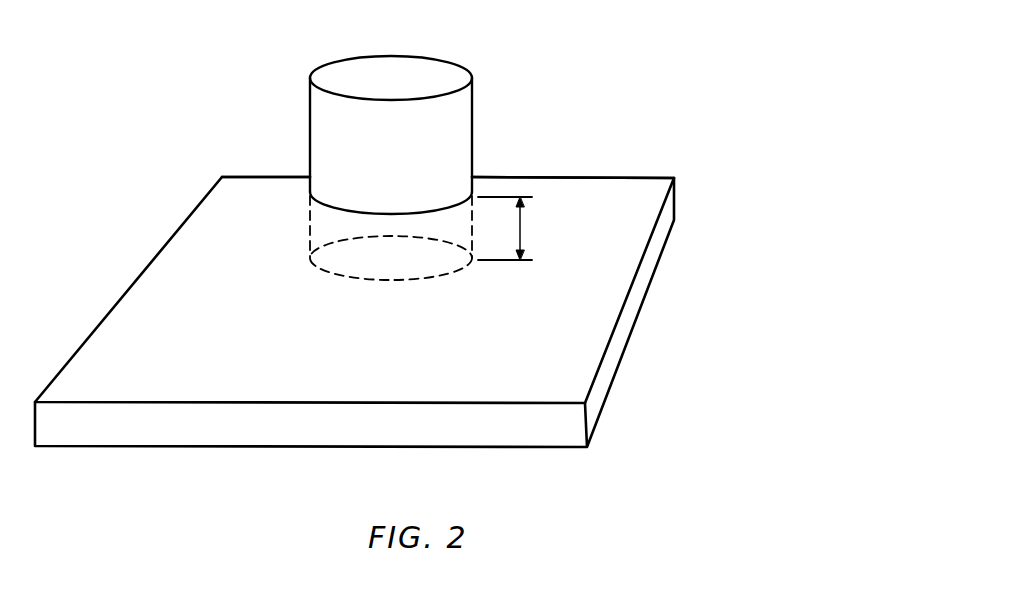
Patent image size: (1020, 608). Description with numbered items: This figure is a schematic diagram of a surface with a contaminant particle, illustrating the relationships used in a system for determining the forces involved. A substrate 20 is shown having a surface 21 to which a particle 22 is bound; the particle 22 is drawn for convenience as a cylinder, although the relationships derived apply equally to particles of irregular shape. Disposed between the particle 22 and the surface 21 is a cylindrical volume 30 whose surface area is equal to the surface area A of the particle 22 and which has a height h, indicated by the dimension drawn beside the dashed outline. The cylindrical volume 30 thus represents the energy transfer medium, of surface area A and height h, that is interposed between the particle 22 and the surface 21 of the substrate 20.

The substrate 20 is at (636, 293).
The surface 21 is at (603, 192).
The particle 22 is at (473, 115).
The cylindrical volume 30 is at (322, 228).
The height h is at (505, 228).
The surface area A is at (408, 65).